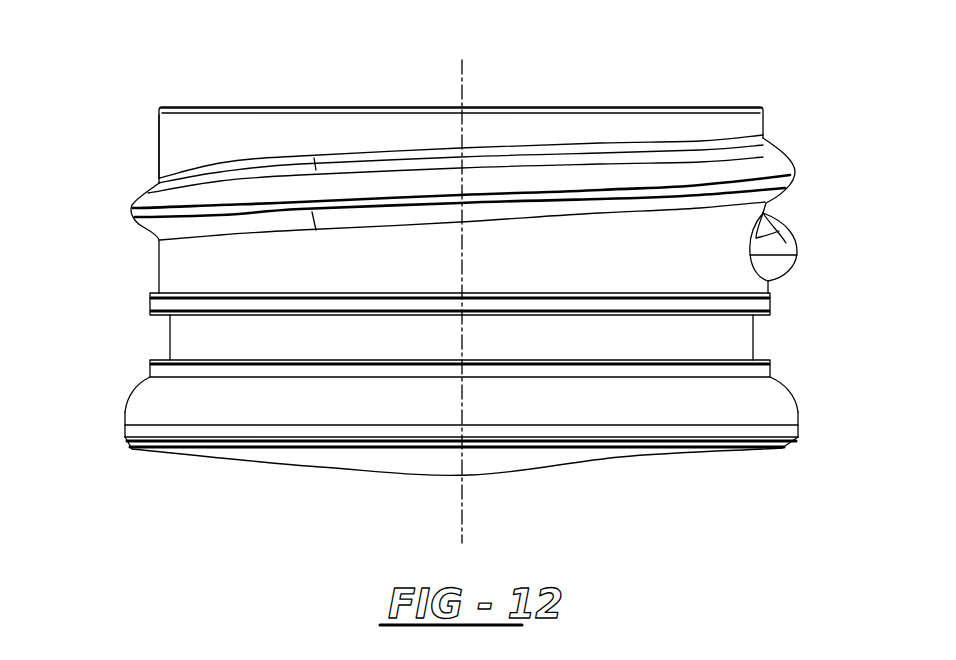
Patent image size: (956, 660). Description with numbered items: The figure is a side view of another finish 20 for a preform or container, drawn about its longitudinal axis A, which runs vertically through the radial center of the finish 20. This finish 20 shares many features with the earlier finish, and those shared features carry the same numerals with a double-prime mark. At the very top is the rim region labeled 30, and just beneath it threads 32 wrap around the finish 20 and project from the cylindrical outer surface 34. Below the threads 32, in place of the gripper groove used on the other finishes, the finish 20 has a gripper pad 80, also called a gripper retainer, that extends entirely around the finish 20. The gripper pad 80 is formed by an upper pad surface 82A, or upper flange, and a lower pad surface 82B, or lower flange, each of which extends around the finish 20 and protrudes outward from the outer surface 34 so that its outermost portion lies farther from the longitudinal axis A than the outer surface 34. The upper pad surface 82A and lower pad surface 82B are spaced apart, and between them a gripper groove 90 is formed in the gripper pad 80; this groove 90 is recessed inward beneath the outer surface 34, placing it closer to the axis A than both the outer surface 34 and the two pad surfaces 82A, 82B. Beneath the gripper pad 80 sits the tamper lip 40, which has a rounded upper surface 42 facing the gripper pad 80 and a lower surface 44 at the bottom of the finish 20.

The finish 20 is at (497, 160).
The top sealing rim 30 is at (459, 56).
The threads 32 is at (422, 208).
The outer surface 34 is at (89, 183).
The tamper lip 40 is at (411, 423).
The rounded upper surface 42 is at (401, 391).
The lower surface 44 is at (421, 467).
The gripper pad 80 is at (450, 319).
The upper pad surface 82A is at (772, 303).
The lower pad surface 82B is at (770, 362).
The gripper groove 90 is at (247, 334).
The longitudinal axis A is at (463, 80).